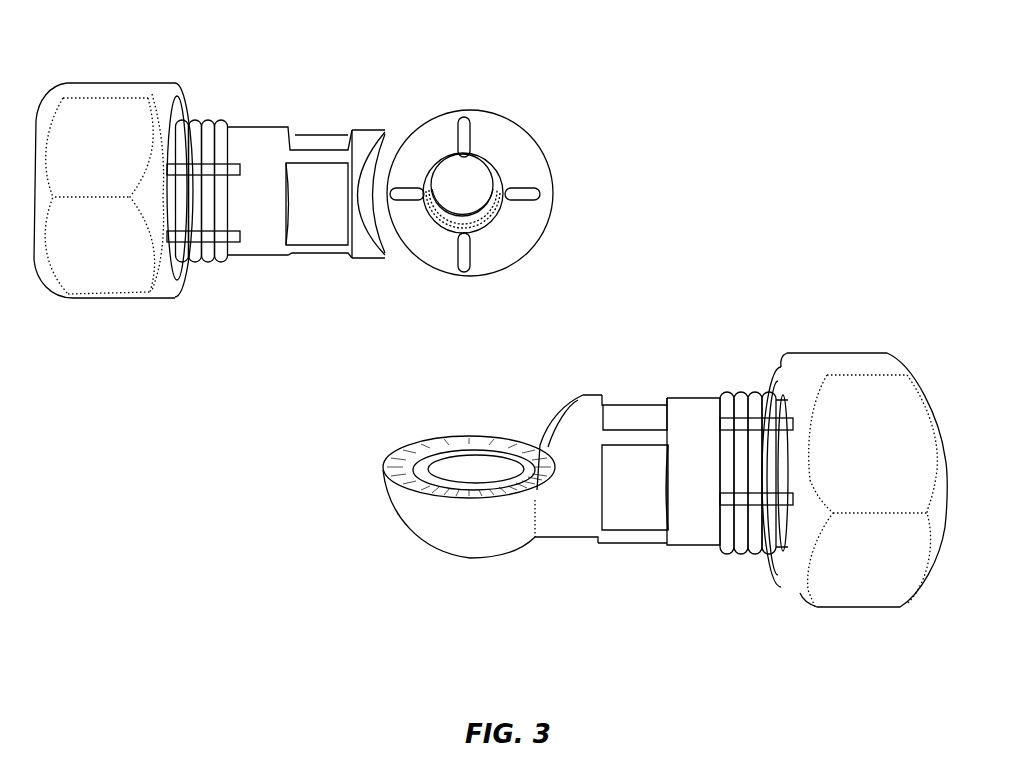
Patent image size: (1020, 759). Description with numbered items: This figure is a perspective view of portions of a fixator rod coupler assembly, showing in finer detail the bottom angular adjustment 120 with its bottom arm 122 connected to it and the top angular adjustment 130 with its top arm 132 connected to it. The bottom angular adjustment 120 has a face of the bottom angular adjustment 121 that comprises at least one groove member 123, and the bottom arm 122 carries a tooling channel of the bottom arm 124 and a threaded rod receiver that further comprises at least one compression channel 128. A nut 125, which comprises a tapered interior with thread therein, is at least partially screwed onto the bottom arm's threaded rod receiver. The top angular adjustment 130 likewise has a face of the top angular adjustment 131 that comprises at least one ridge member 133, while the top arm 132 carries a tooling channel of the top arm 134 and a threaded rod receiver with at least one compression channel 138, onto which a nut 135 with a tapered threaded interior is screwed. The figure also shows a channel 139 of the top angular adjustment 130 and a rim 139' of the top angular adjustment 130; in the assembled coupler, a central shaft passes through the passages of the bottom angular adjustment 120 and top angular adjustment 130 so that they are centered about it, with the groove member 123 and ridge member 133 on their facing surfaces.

The bottom angular adjustment 120 is at (430, 520).
The face of the bottom angular adjustment 121 is at (395, 468).
The bottom arm 122 is at (693, 515).
The groove member 123 is at (480, 443).
The tooling channel of the bottom arm 124 is at (632, 513).
The nut 125 is at (872, 580).
The compression channel 128 is at (737, 390).
The top angular adjustment 130 is at (560, 222).
The face of the top angular adjustment 131 is at (410, 145).
The top arm 132 is at (260, 130).
The ridge member 133 is at (463, 120).
The tooling channel of the top arm 134 is at (323, 130).
The nut 135 is at (92, 122).
The compression channel 138 is at (202, 170).
The channel of the top angular adjustment 139 is at (442, 238).
The rim of the top angular adjustment 139' is at (511, 237).